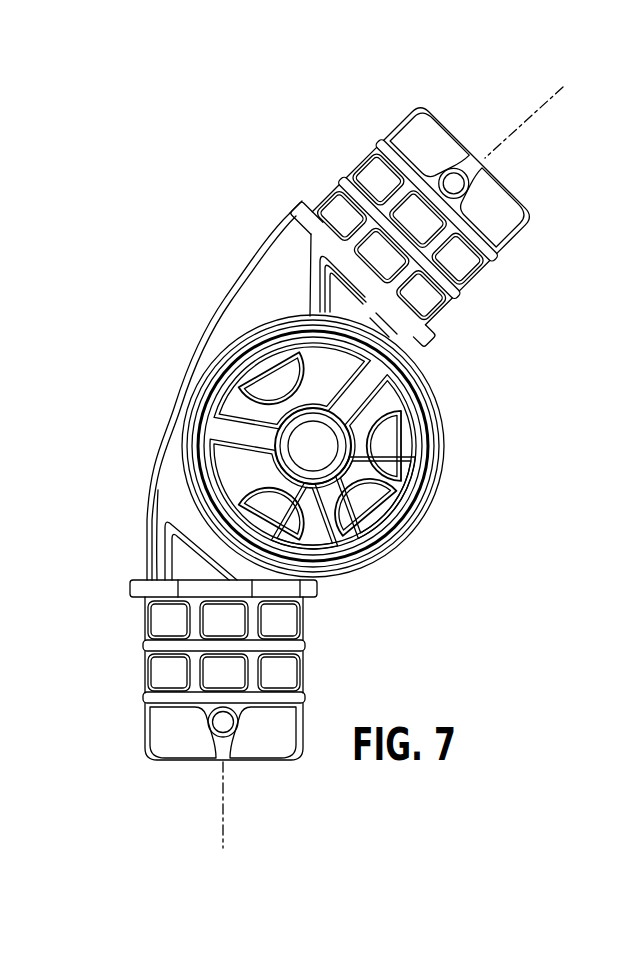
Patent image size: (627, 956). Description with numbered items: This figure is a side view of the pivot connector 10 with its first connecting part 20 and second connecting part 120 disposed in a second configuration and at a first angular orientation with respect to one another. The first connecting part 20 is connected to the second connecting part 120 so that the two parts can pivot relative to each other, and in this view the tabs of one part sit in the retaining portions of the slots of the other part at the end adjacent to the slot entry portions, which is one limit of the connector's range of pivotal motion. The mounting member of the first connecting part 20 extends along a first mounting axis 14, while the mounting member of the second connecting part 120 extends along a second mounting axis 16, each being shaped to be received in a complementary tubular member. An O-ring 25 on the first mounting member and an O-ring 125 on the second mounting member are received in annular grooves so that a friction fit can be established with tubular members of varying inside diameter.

The pivot connector 10 is at (208, 272).
The first mounting axis 14 is at (222, 803).
The second mounting axis 16 is at (535, 112).
The first connecting part 20 is at (147, 500).
The O-ring 25 is at (145, 697).
The second connecting part 120 is at (458, 308).
The O-ring 125 is at (493, 263).